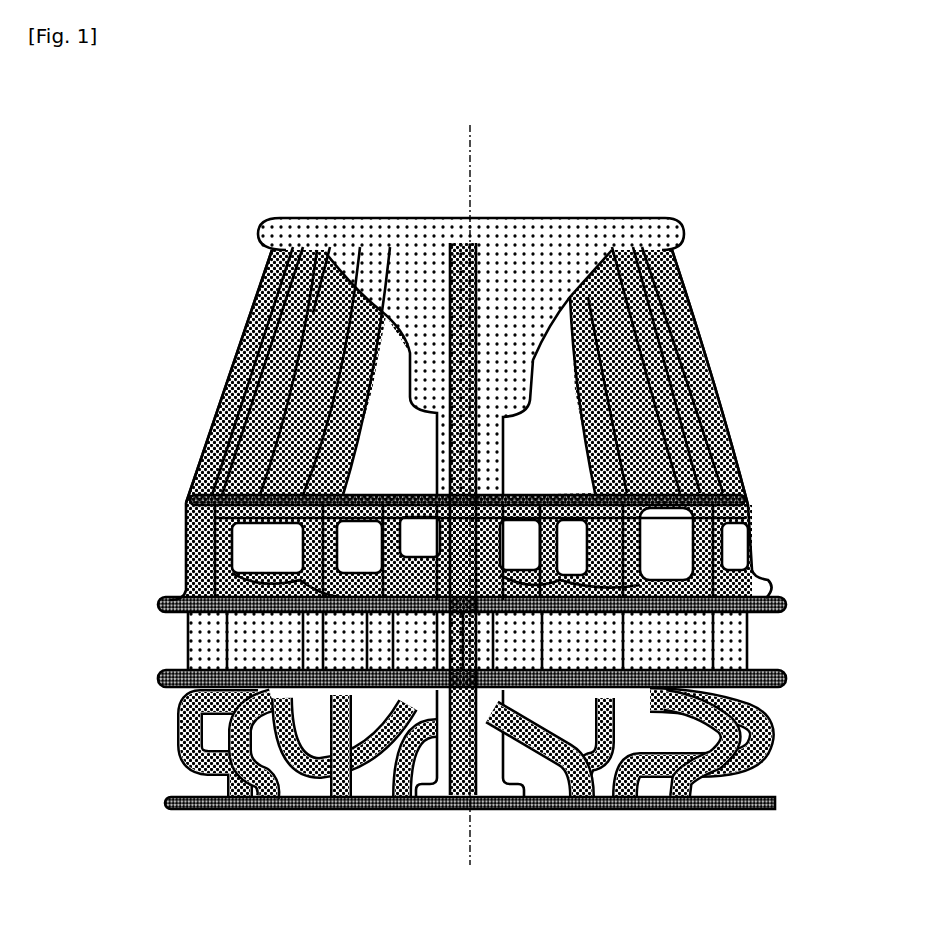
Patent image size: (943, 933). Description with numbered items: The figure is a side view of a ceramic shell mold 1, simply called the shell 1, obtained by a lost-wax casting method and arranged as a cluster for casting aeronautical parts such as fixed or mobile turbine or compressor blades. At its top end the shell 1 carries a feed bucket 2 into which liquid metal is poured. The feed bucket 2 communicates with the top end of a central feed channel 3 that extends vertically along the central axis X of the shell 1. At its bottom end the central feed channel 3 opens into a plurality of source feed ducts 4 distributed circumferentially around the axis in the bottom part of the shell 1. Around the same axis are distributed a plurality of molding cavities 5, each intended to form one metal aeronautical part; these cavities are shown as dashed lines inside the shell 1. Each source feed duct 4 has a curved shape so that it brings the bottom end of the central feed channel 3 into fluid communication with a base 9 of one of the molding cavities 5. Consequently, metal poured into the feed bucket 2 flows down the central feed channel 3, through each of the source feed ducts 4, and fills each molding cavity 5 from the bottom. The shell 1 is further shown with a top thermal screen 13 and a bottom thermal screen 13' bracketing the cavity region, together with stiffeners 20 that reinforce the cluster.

The ceramic shell mold 1 is at (136, 449).
The feed bucket 2 is at (540, 233).
The central feed channel 3 is at (490, 470).
The stiffeners 20 is at (723, 418).
The top thermal screen 13 is at (486, 589).
The molding cavities 5 is at (577, 640).
The bottom thermal screen 13' is at (489, 664).
The base of molding cavity 9 is at (752, 723).
The source feed ducts 4 is at (283, 780).